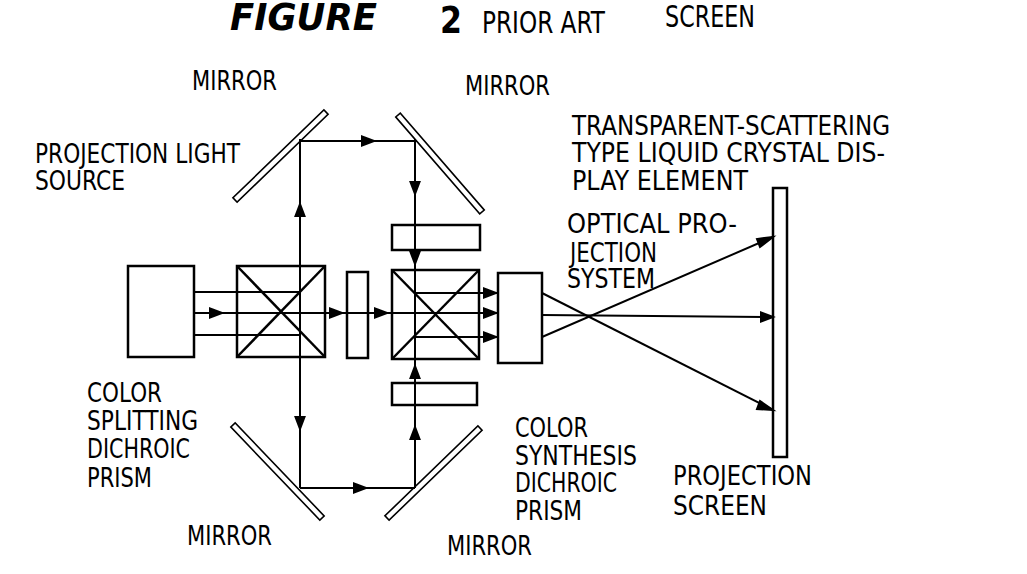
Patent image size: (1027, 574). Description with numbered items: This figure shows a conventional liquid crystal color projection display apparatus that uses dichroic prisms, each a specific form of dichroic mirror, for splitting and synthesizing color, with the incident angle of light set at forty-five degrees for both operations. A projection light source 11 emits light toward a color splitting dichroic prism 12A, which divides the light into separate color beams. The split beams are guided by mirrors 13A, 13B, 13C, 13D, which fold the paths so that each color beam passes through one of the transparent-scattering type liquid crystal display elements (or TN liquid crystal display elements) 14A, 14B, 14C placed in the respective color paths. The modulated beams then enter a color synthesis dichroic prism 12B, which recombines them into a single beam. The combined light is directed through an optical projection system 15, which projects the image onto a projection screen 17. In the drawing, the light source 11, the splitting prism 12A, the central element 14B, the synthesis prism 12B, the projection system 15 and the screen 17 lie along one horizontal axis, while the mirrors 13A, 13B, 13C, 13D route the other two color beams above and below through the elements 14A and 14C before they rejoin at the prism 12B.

The projection light source 11 is at (147, 266).
The dichroic prism 12A is at (254, 358).
The dichroic prism 12B is at (479, 359).
The mirror 13A is at (272, 162).
The mirror 13B is at (445, 162).
The mirror 13C is at (256, 454).
The mirror 13D is at (425, 488).
The transparent-scattering type liquid crystal display element 14A is at (480, 240).
The transparent-scattering type liquid crystal display element 14B is at (358, 272).
The transparent-scattering type liquid crystal display element 14C is at (393, 392).
The optical projection system 15 is at (535, 273).
The projection screen 17 is at (772, 425).